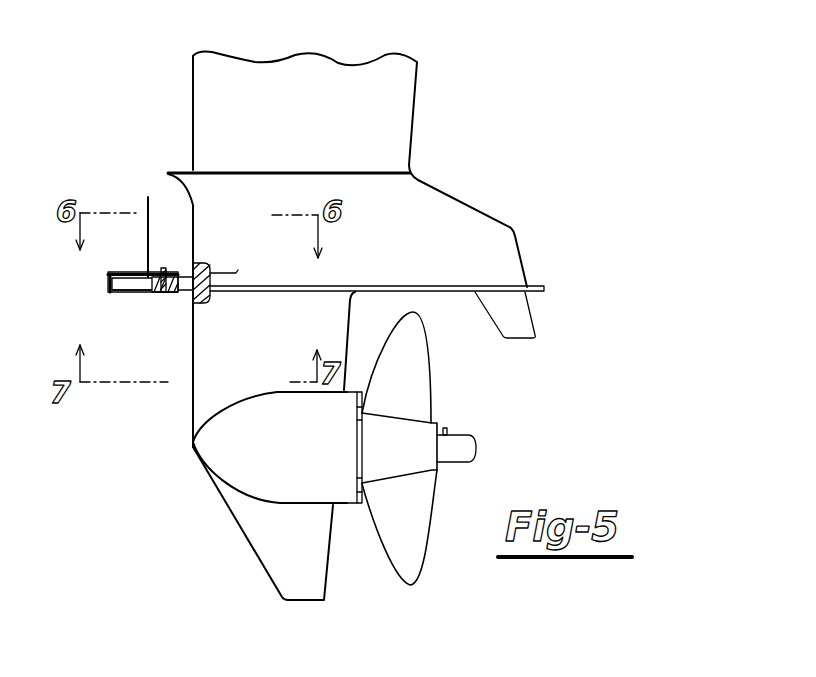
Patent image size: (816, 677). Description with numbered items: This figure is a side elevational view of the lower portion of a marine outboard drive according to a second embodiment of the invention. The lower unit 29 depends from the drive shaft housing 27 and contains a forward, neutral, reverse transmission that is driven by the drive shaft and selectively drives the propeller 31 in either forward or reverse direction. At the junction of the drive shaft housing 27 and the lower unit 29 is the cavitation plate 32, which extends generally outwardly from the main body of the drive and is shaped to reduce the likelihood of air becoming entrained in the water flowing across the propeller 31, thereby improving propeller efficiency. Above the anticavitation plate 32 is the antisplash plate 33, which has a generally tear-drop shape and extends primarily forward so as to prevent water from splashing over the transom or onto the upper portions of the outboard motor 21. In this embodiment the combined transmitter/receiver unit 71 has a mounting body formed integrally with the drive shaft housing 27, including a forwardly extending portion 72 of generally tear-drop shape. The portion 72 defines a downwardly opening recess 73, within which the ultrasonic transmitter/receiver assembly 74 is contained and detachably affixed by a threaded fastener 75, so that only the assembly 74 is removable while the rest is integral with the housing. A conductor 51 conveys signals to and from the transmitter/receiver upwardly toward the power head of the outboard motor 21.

The outboard motor 21 is at (416, 110).
The drive shaft housing 27 is at (430, 211).
The antisplash plate 33 is at (256, 170).
The cavitation plate 32 is at (333, 286).
The conductor 51 is at (144, 207).
The transmitter/receiver unit 71 is at (130, 273).
The forwardly extending portion 72 is at (118, 284).
The recess 73 is at (123, 294).
The ultrasonic transmitter/receiver assembly 74 is at (140, 291).
The threaded fastener 75 is at (165, 270).
The lower unit 29 is at (252, 533).
The propeller 31 is at (418, 540).